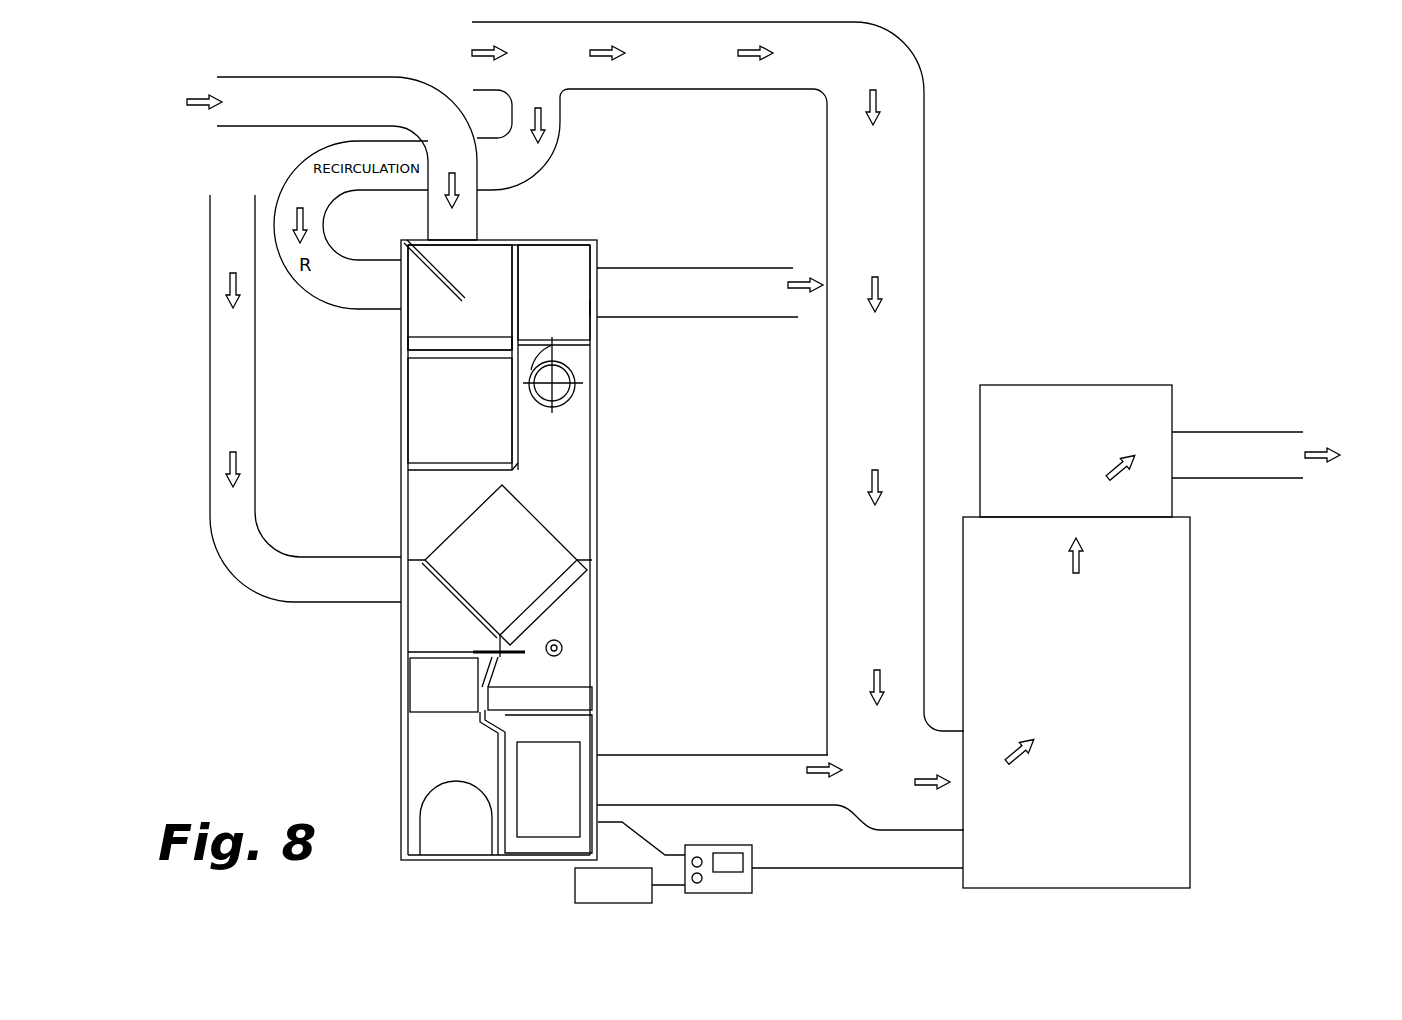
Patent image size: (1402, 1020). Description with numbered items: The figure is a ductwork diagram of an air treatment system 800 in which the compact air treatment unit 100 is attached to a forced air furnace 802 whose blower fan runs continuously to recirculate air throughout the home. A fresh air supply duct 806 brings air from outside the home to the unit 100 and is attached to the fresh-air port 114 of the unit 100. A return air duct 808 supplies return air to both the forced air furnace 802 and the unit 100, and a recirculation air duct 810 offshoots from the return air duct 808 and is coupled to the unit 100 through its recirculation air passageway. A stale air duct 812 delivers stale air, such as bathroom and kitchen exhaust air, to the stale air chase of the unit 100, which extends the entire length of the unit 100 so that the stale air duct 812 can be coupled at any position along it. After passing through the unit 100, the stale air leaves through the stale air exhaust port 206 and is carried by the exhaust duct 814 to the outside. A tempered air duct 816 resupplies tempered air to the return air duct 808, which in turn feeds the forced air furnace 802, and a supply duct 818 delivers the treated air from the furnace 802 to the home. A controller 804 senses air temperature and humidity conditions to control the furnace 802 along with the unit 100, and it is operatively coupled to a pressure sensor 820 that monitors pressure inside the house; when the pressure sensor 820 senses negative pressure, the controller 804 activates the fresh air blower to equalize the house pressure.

The unit 100 is at (595, 238).
The fresh-air port 114 is at (478, 237).
The stale air exhaust port 206 is at (598, 320).
The air treatment system 800 is at (1083, 358).
The forced air furnace 802 is at (1192, 668).
The controller 804 is at (752, 853).
The fresh air supply duct 806 is at (306, 77).
The return air duct 808 is at (925, 202).
The recirculation air duct 810 is at (548, 157).
The stale air duct 812 is at (257, 402).
The exhaust duct 814 is at (707, 262).
The tempered air duct 816 is at (658, 755).
The supply duct 818 is at (1228, 432).
The pressure sensor 820 is at (575, 892).